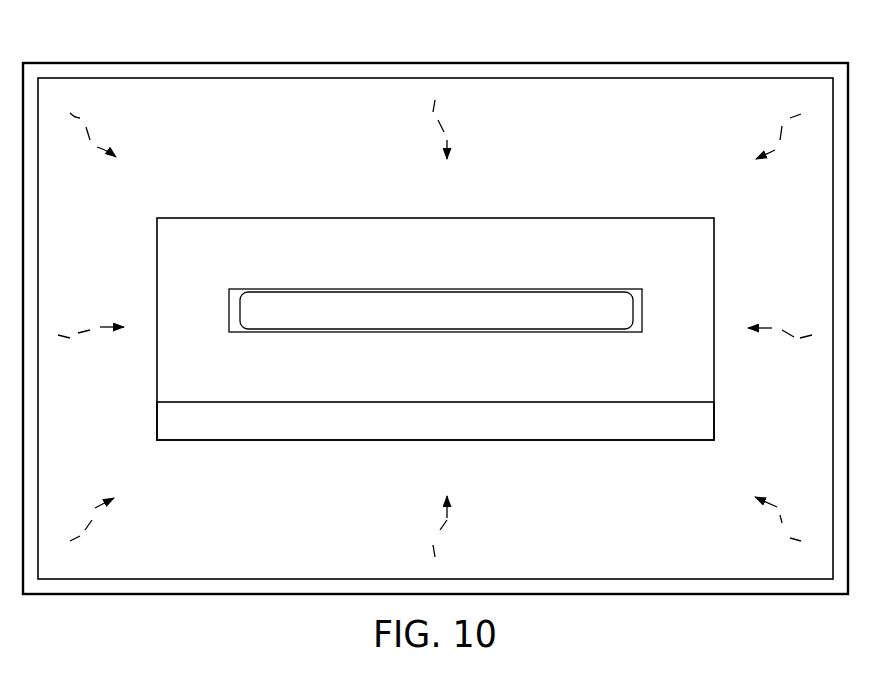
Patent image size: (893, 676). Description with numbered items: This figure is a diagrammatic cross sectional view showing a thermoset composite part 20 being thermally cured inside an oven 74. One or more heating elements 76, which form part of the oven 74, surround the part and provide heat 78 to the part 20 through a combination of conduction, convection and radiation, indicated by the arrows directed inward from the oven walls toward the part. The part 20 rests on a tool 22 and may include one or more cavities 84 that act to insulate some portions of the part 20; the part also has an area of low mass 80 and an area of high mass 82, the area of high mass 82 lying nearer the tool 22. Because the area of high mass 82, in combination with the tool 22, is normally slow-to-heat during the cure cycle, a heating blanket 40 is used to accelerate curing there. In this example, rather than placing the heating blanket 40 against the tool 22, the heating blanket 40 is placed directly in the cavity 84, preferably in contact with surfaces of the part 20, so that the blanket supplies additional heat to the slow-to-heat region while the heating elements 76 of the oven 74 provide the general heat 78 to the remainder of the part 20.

The oven 74 is at (524, 61).
The heating element 76 is at (291, 72).
The thermoset composite part 20 is at (628, 225).
The tool 22 is at (627, 430).
The heating blanket 40 is at (290, 298).
The heat 78 is at (88, 138).
The area of low mass 80 is at (495, 252).
The area of high mass 82 is at (495, 372).
The cavity 84 is at (645, 305).